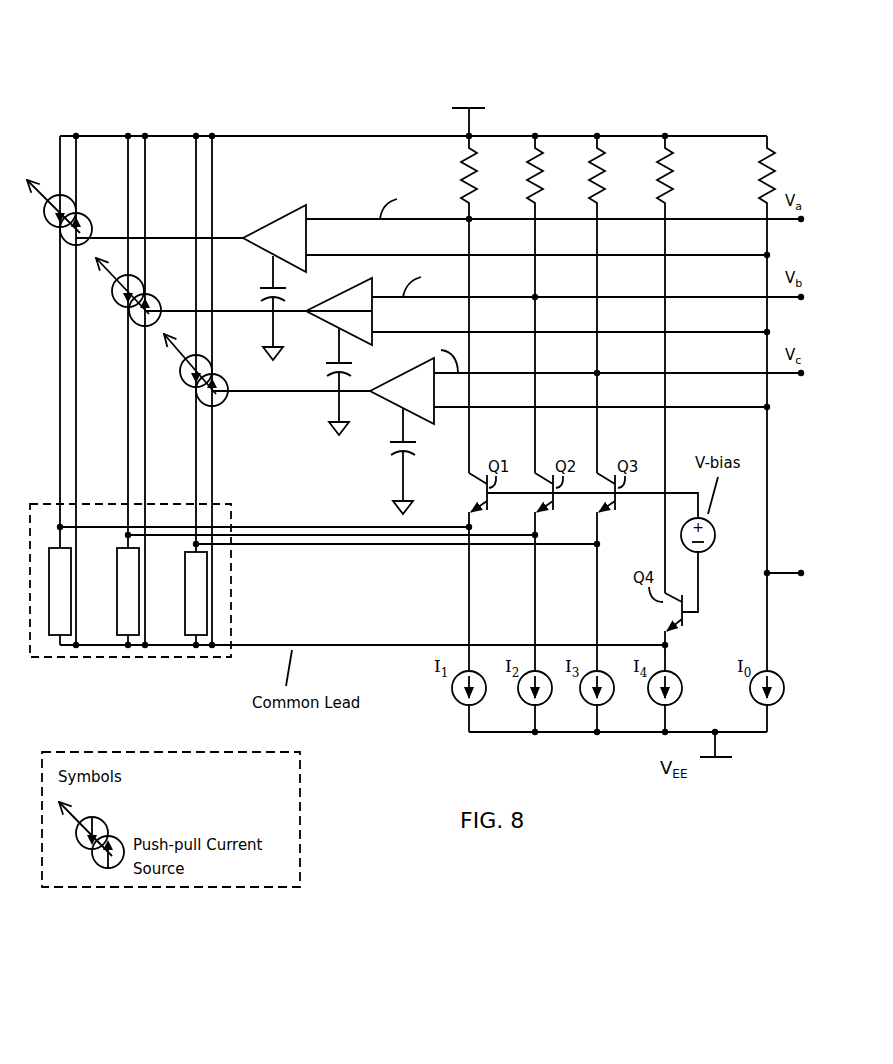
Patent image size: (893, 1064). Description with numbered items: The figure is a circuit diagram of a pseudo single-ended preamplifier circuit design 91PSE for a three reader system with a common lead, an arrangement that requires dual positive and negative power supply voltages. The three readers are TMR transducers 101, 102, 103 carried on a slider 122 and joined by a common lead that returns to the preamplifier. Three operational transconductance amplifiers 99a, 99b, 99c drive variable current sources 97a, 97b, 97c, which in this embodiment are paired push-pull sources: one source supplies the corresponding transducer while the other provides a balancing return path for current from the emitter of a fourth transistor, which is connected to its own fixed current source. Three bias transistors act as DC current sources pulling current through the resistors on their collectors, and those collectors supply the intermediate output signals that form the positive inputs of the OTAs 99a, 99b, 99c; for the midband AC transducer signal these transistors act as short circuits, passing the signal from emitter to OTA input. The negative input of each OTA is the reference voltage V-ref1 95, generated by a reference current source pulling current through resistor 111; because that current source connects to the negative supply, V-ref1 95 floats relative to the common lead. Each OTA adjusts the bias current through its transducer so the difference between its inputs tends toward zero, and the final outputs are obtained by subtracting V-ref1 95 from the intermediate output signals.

The pseudo single-ended preamplifier circuit design 91PSE is at (116, 98).
The variable current source 97a is at (77, 216).
The variable current source 97b is at (145, 296).
The variable current source 97c is at (212, 376).
The operational transconductance amplifier 99a is at (280, 220).
The operational transconductance amplifier 99b is at (348, 297).
The operational transconductance amplifier 99c is at (416, 376).
The resistor 111 is at (757, 185).
The V-ref1 95 is at (775, 569).
The TMR transducer 101 is at (51, 637).
The TMR transducer 102 is at (118, 637).
The TMR transducer 103 is at (186, 637).
The slider 122 is at (232, 607).